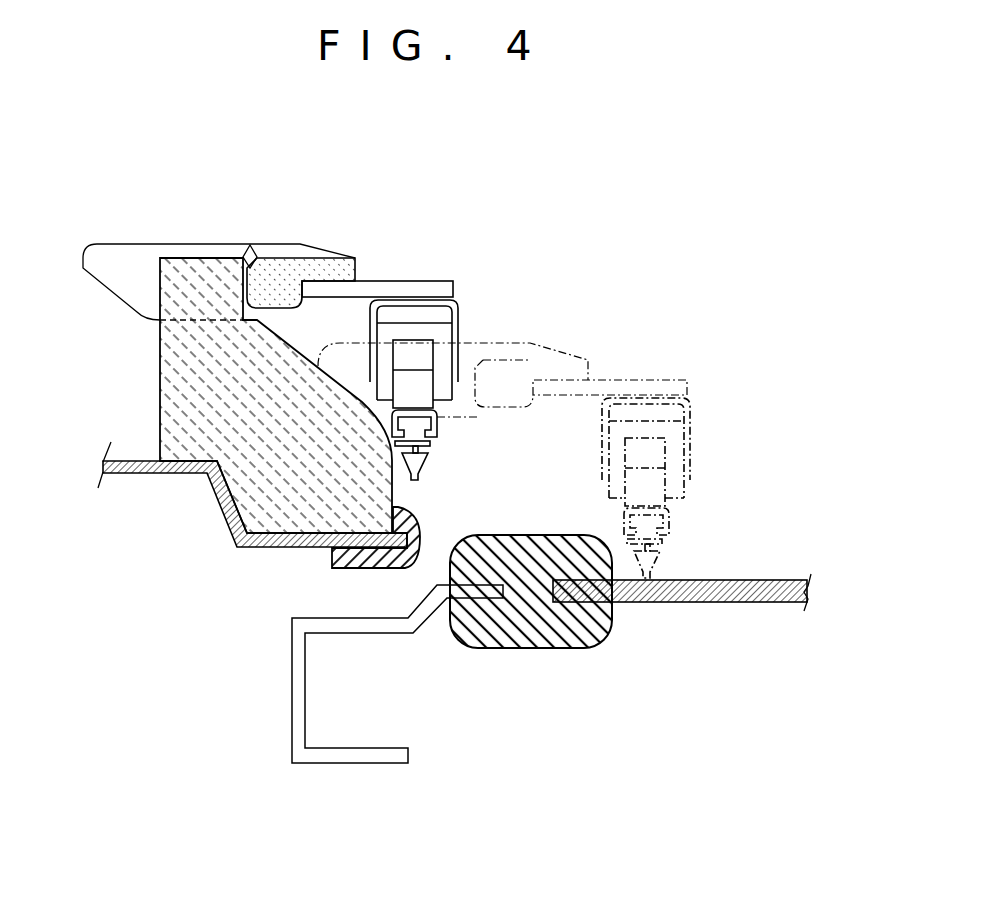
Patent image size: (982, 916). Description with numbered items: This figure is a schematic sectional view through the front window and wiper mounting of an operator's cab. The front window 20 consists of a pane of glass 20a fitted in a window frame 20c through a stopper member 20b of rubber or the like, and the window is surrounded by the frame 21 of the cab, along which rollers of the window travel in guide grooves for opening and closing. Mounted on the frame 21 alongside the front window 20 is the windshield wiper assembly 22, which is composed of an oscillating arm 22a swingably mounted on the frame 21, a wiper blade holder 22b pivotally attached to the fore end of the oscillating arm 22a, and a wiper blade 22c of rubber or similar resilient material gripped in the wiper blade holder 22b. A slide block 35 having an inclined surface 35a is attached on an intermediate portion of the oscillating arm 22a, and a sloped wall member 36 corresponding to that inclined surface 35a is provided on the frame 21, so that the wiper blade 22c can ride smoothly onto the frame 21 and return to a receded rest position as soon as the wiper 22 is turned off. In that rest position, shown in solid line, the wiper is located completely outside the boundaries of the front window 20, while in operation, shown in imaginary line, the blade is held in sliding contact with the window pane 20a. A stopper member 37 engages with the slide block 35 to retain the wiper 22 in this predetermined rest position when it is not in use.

The front window 20 is at (466, 616).
The pane of glass 20a is at (748, 587).
The stopper member 20b is at (522, 650).
The window frame 20c is at (293, 693).
The frame 21 is at (170, 473).
The windshield wiper assembly 22 is at (496, 350).
The oscillating arm 22a is at (437, 288).
The wiper blade holder 22b is at (457, 322).
The wiper blade 22c is at (425, 468).
The slide block 35 is at (190, 258).
The inclined surface 35a is at (90, 290).
The sloped wall member 36 is at (190, 410).
The stopper member 37 is at (233, 268).